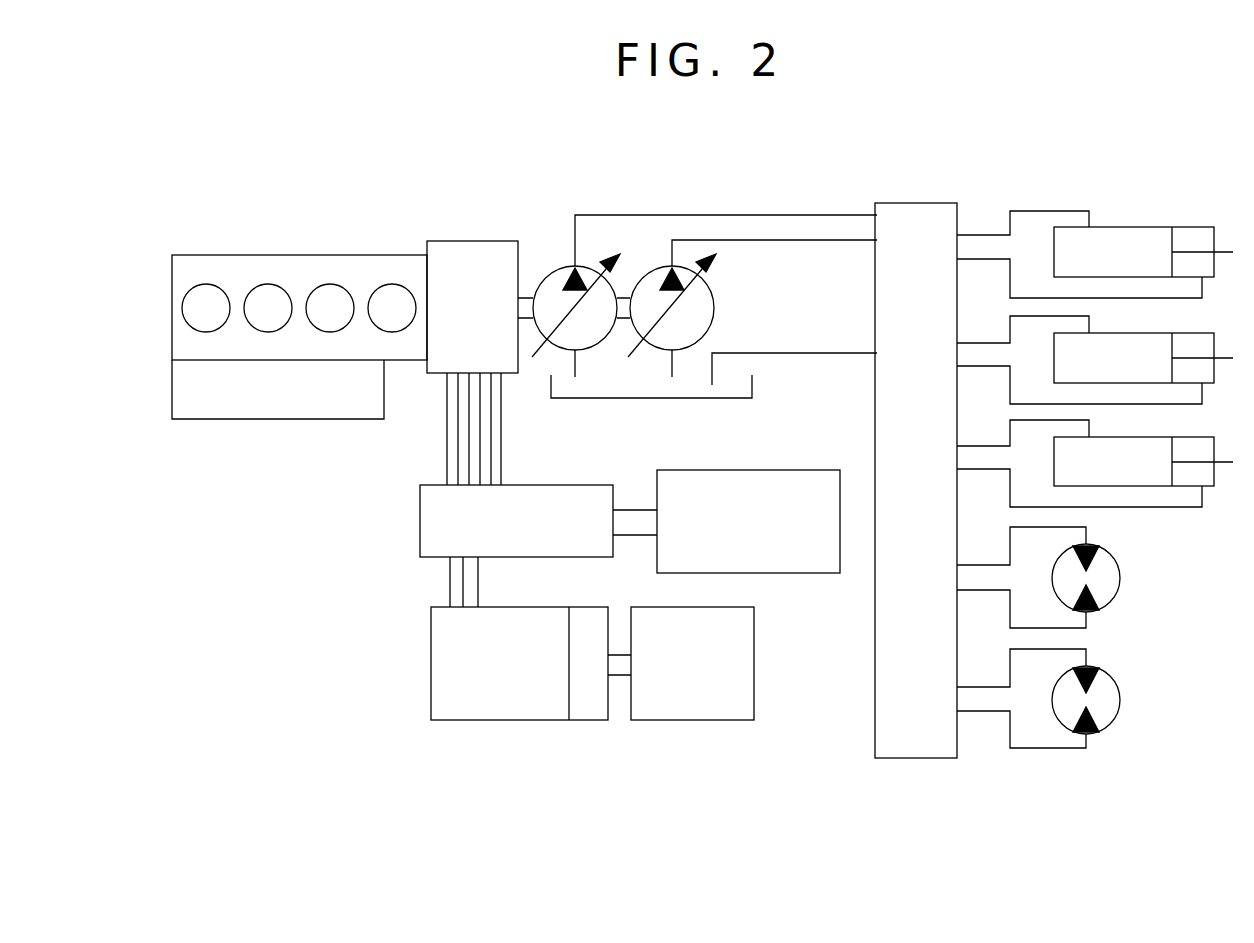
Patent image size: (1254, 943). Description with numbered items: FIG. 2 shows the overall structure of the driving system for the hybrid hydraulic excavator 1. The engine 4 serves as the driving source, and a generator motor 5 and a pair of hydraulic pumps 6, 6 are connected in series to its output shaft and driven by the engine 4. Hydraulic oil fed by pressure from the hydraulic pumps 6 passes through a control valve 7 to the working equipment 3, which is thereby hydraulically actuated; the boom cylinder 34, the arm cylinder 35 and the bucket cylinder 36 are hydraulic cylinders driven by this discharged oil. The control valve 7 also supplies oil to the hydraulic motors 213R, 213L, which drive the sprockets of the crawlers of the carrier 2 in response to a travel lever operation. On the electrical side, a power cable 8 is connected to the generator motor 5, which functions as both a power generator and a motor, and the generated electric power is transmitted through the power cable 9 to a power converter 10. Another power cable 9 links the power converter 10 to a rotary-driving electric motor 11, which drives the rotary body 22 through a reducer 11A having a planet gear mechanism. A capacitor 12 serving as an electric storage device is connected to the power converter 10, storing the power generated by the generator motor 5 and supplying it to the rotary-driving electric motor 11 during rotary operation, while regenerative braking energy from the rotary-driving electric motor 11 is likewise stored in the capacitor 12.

The hybrid hydraulic excavator 1 is at (860, 140).
The lower travelling body 2 is at (1183, 633).
The working equipment 3 is at (1149, 172).
The engine 4 is at (304, 270).
The generator motor 5 is at (473, 258).
The hydraulic pump 6 is at (553, 283).
The control valve 7 is at (907, 746).
The power cable 8 is at (507, 443).
The power cable 9 is at (443, 441).
The power converter 10 is at (432, 520).
The rotary-driving electric motor 11 is at (490, 707).
The reducer 11A is at (590, 707).
The capacitor 12 is at (768, 490).
The rotary body 22 is at (697, 707).
The boom cylinder 34 is at (1204, 230).
The arm cylinder 35 is at (1204, 336).
The bucket cylinder 36 is at (1204, 440).
The hydraulic motor 213L is at (1107, 580).
The hydraulic motor 213R is at (1107, 702).